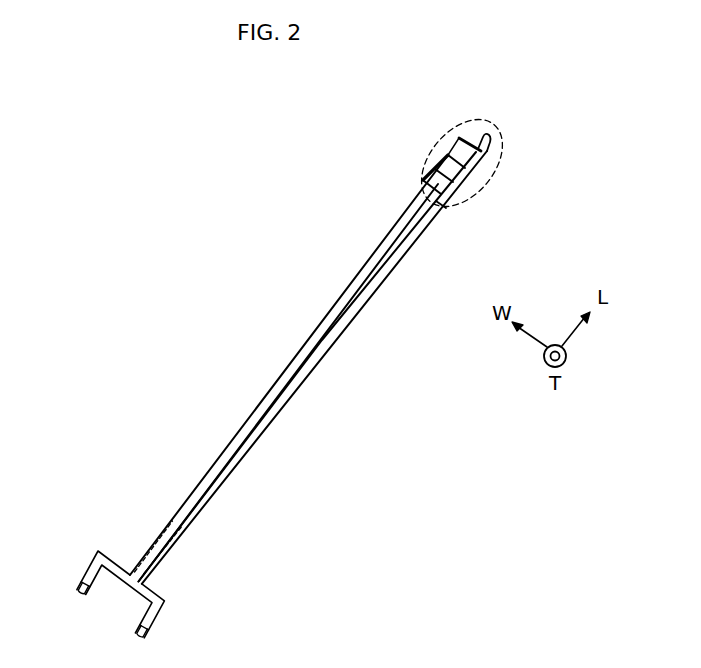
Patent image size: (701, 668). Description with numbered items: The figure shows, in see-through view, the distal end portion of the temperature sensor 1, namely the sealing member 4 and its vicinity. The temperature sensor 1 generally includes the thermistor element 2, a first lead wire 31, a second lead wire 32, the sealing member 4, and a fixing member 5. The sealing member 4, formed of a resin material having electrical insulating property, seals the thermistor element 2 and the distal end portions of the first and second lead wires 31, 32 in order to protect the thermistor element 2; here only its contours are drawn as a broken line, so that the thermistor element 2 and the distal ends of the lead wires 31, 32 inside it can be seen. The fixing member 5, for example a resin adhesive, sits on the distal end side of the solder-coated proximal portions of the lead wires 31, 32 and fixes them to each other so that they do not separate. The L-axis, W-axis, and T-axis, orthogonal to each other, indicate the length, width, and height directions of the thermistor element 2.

The temperature sensor 1 is at (43, 144).
The thermistor element 2 is at (467, 137).
The sealing member 4 is at (489, 180).
The fixing member 5 is at (166, 556).
The first lead wire 31 is at (276, 418).
The second lead wire 32 is at (257, 403).